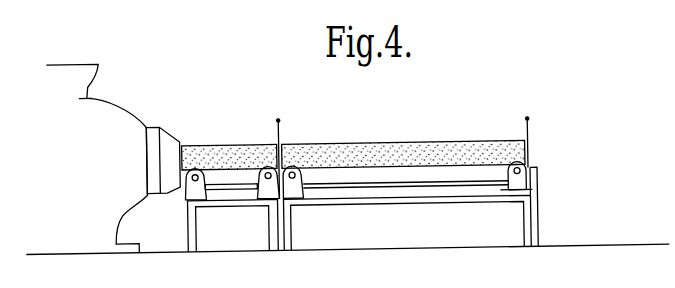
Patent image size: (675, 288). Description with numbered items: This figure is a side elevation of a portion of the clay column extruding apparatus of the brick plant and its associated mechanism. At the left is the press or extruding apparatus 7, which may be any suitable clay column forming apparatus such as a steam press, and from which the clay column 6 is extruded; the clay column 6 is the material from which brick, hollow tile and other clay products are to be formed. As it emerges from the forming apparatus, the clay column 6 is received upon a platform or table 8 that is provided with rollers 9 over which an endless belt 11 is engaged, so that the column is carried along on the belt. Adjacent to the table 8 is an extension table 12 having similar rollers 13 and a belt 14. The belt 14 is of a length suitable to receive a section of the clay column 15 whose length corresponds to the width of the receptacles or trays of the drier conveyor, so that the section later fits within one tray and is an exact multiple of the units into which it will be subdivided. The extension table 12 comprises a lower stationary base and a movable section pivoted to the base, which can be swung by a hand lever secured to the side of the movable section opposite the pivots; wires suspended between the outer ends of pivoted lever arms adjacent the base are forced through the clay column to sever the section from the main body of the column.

The clay column 6 is at (212, 146).
The press or extruding apparatus 7 is at (122, 124).
The platform or table 8 is at (221, 202).
The rollers 9 is at (186, 191).
The endless belt 11 is at (248, 185).
The extension table 12 is at (361, 203).
The rollers 13 is at (307, 186).
The belt 14 is at (419, 188).
The section of the clay column 15 is at (494, 146).